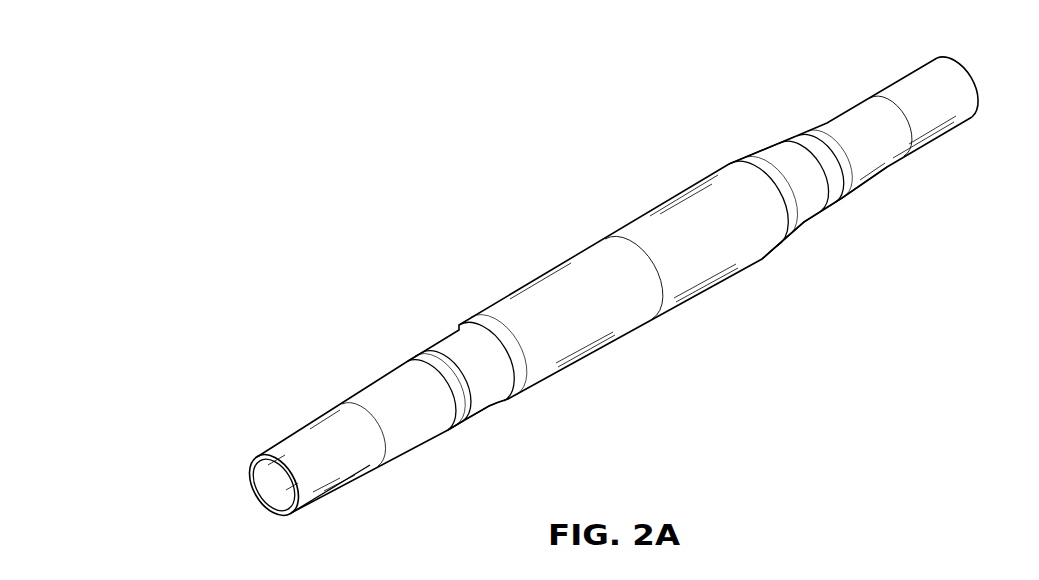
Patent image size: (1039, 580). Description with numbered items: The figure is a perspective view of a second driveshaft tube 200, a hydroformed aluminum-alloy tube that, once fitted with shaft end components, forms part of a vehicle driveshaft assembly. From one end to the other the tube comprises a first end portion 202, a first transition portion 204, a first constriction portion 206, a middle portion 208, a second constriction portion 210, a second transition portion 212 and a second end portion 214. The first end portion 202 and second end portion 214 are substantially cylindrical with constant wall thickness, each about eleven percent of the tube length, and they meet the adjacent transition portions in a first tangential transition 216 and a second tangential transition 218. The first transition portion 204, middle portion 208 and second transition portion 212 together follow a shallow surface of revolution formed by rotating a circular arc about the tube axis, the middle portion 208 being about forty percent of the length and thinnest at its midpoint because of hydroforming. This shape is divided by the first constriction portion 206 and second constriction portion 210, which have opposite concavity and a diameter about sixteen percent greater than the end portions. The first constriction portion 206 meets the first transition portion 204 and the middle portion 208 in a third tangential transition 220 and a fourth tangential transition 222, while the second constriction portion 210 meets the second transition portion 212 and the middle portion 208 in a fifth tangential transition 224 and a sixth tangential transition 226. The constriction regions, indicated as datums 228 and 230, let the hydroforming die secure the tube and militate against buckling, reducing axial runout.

The second driveshaft tube 200 is at (358, 216).
The first end portion 202 is at (281, 443).
The first transition portion 204 is at (405, 441).
The first constriction portion 206 is at (480, 403).
The middle portion 208 is at (610, 240).
The second constriction portion 210 is at (797, 220).
The second transition portion 212 is at (872, 178).
The second end portion 214 is at (895, 86).
The first tangential transition 216 is at (352, 408).
The second tangential transition 218 is at (906, 156).
The third tangential transition 220 is at (430, 354).
The fourth tangential transition 222 is at (463, 325).
The fifth tangential transition 224 is at (783, 140).
The sixth tangential transition 226 is at (738, 165).
The quaternary datum 228 is at (428, 342).
The second connector region 230 is at (752, 152).